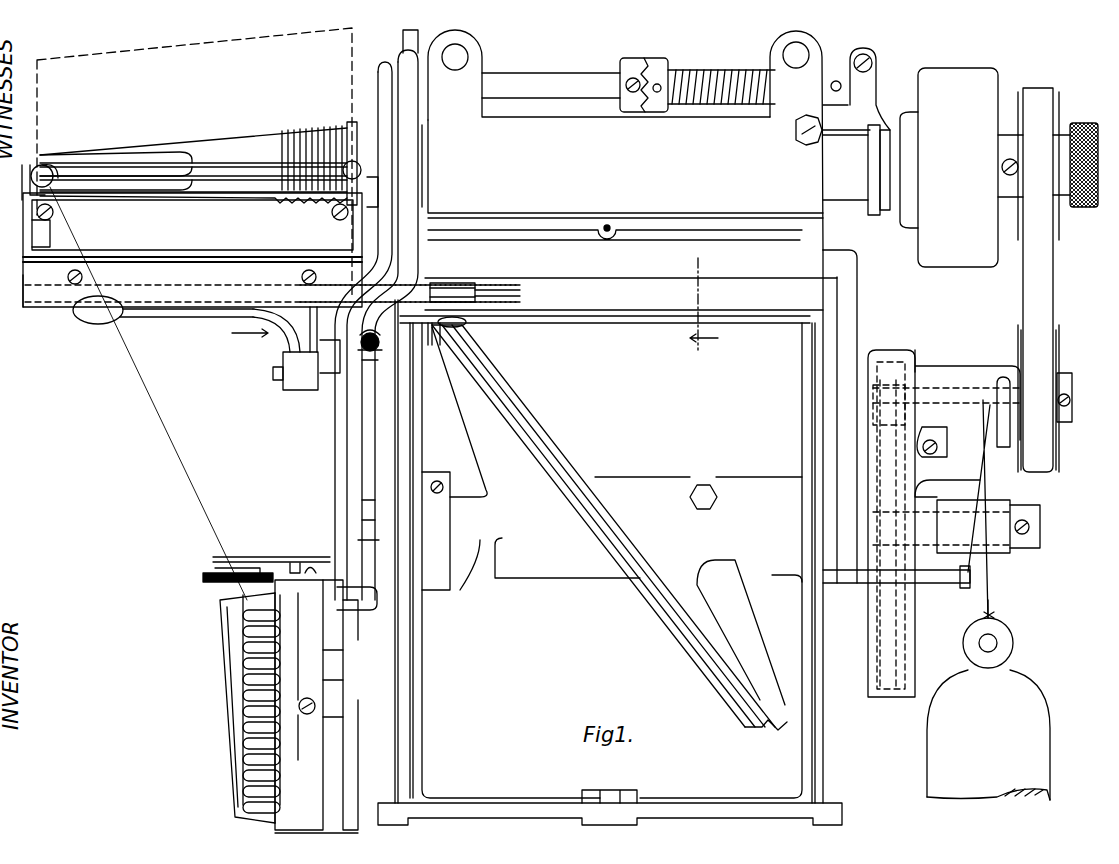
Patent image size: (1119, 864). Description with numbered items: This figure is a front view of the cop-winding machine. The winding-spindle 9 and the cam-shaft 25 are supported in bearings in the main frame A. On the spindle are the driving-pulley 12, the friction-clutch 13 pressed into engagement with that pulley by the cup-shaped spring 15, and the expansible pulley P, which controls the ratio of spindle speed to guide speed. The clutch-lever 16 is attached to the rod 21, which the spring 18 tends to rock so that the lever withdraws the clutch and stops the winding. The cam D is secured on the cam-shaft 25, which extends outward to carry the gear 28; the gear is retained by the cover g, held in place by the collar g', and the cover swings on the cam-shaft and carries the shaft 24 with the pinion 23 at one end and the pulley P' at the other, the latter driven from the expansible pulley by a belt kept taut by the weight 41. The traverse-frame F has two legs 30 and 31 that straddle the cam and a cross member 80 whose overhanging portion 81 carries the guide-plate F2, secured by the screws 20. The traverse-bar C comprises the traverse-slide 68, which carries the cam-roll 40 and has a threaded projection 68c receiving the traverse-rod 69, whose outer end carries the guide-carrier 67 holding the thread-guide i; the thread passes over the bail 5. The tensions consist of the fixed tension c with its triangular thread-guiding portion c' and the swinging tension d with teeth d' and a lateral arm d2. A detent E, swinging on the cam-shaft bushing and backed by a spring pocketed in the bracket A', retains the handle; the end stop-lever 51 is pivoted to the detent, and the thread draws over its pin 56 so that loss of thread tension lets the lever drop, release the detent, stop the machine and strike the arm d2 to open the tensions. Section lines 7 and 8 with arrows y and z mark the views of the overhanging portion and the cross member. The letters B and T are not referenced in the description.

The main frame A is at (610, 472).
The bracket A' is at (329, 676).
The sheet outline B is at (200, 126).
The traverse-bar C is at (425, 295).
The cam D is at (530, 428).
The detent E is at (410, 189).
The traverse-frame F is at (119, 287).
The guide-plate F2 is at (192, 250).
The expansible pulley P is at (1048, 280).
The pulley P' is at (1059, 400).
The type holder T is at (278, 706).
The fixed tension c is at (236, 700).
The thread-guiding portion c' is at (226, 586).
The swinging tension d is at (276, 631).
The teeth d' is at (230, 735).
The lateral arm d2 is at (359, 606).
The cover g is at (944, 523).
The collar g' is at (942, 509).
The thread-guide i is at (24, 184).
The arrow y is at (276, 348).
The arrow z is at (712, 339).
The bail 5 is at (226, 168).
The section line 7 is at (251, 345).
The section line 8 is at (694, 305).
The winding-spindle 9 is at (352, 149).
The driving-pulley 12 is at (958, 262).
The friction-clutch 13 is at (899, 198).
The cup-shaped spring 15 is at (874, 205).
The clutch-lever 16 is at (885, 115).
The spring 18 is at (722, 76).
The screws 20 is at (85, 277).
The rod 21 is at (556, 88).
The pinion 23 is at (890, 405).
The shaft 24 is at (1072, 407).
The cam-shaft 25 is at (1043, 528).
The gear 28 is at (887, 638).
The leg 30 is at (345, 430).
The leg 31 is at (848, 356).
The cam-roll 40 is at (455, 333).
The weight 41 is at (988, 700).
The end stop-lever 51 is at (335, 500).
The pin 56 is at (272, 557).
The guide-carrier 67 is at (36, 244).
The traverse-slide 68 is at (516, 300).
The cylindrically-formed projection 68c is at (470, 284).
The traverse-rod 69 is at (160, 297).
The cross member 80 is at (618, 300).
The overhanging portion 81 is at (66, 308).